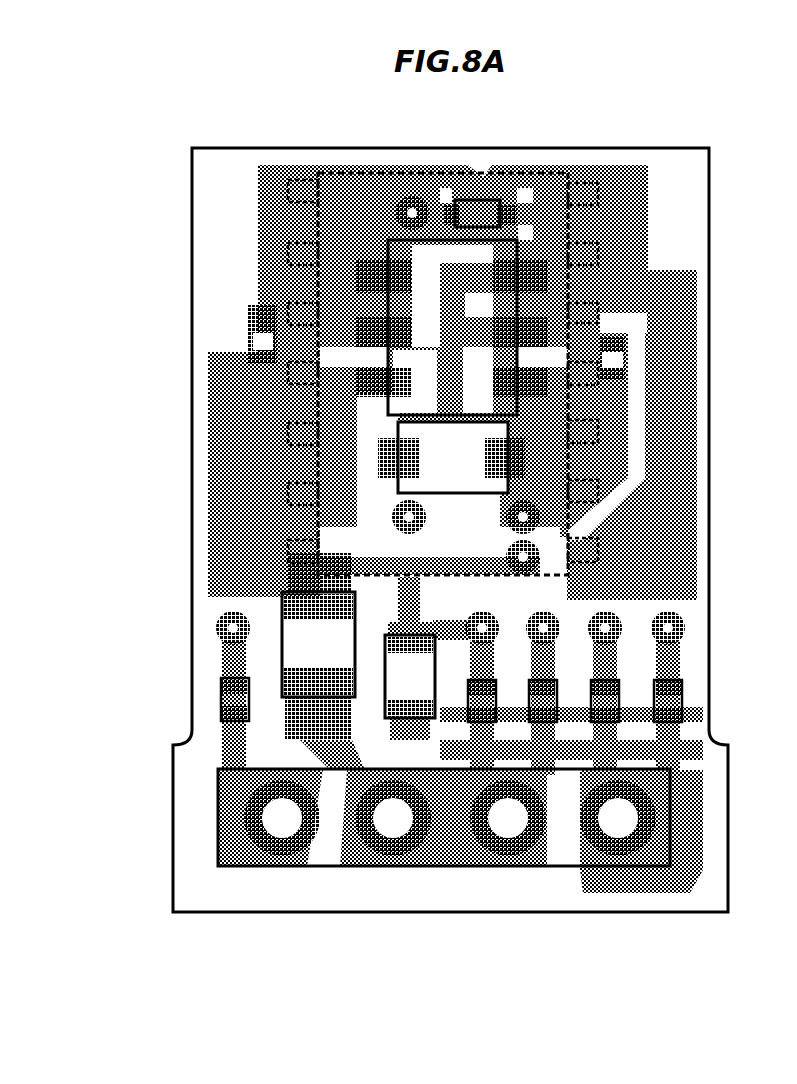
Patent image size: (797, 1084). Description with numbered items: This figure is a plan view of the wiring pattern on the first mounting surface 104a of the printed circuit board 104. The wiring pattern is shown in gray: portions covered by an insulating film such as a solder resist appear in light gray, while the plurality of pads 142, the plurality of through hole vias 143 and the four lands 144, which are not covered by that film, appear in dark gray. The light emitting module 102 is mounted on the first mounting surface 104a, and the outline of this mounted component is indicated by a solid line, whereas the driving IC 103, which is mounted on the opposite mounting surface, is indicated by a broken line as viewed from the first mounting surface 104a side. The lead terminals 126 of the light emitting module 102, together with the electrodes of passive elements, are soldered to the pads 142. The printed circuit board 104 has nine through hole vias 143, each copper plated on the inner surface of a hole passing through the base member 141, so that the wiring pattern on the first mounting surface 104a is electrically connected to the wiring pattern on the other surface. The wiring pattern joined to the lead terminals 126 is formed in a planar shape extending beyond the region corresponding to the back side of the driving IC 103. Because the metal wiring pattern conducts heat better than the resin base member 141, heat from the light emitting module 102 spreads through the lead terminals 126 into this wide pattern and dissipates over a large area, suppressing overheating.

The light emitting module 102 is at (440, 240).
The driving IC 103 is at (483, 176).
The printed circuit board 104 is at (640, 150).
The first mounting surface 104a is at (213, 204).
The lead terminals 126 is at (380, 320).
The base member 141 is at (690, 212).
The pads 142 is at (525, 262).
The through hole vias 143 is at (408, 205).
The lands 144 is at (378, 852).